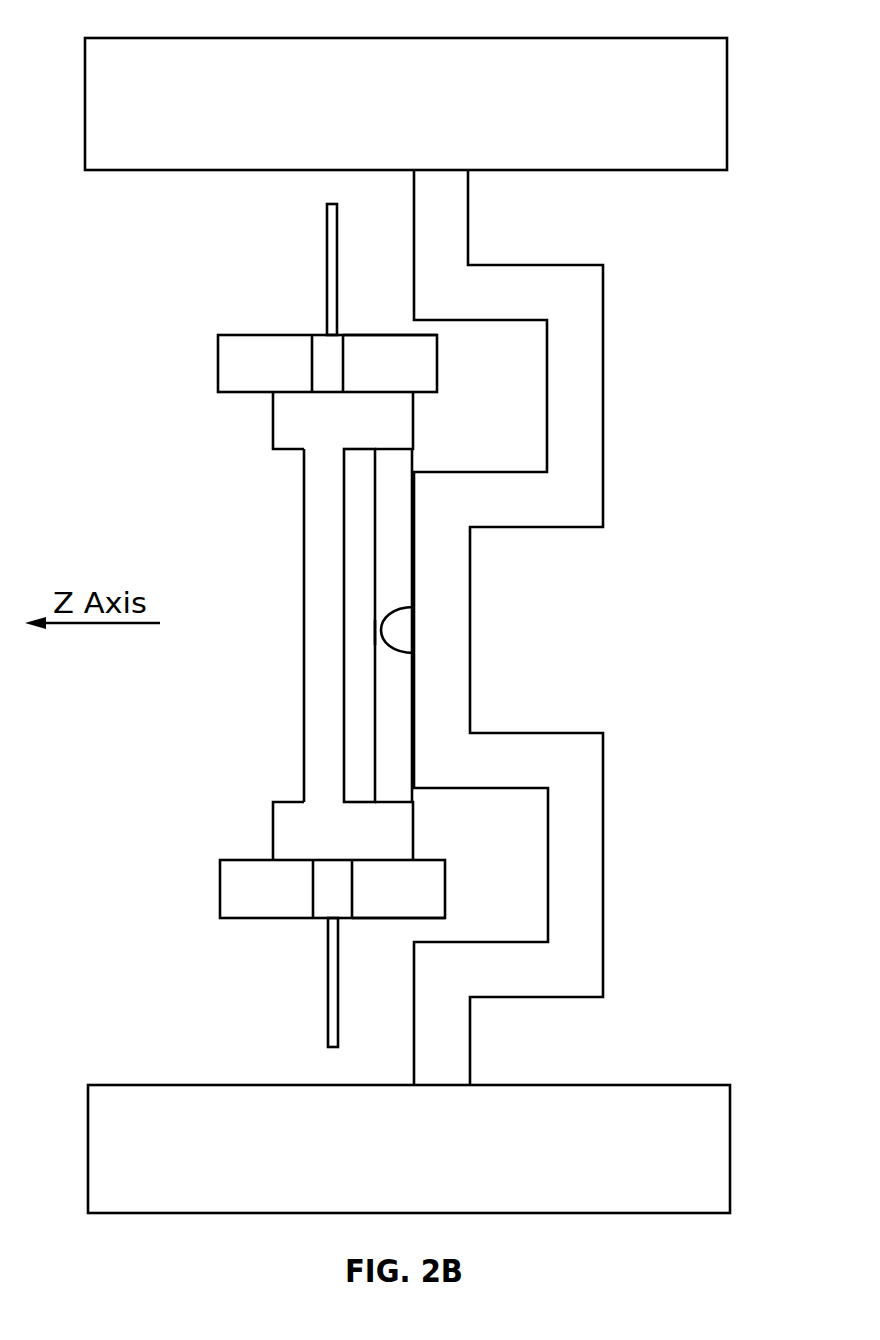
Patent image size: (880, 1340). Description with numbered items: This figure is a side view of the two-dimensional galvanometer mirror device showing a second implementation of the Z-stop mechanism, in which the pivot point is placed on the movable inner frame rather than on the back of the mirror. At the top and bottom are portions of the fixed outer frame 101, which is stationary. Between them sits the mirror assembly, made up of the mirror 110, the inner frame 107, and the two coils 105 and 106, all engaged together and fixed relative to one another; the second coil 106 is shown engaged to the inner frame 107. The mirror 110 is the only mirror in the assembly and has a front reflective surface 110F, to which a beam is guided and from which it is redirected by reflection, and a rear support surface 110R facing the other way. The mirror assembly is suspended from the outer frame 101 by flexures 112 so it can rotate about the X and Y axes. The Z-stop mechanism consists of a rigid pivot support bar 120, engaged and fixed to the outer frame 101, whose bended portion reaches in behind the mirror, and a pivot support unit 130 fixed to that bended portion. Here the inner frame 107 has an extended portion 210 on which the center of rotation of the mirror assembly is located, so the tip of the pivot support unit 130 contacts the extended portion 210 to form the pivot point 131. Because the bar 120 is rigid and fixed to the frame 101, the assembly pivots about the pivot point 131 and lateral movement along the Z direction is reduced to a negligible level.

The fixed outer frame 101 is at (165, 38).
The coil 105 is at (218, 362).
The second coil 106 is at (432, 392).
The inner frame 107 is at (273, 420).
The mirror 110 is at (372, 625).
The front reflective surface 110F is at (304, 512).
The rear support surface 110R is at (344, 697).
The torsional hinge 112 is at (326, 270).
The pivot support bar 120 is at (603, 388).
The pivot support unit 130 is at (397, 632).
The pivot point 131 is at (375, 632).
The extended portion 210 is at (365, 718).